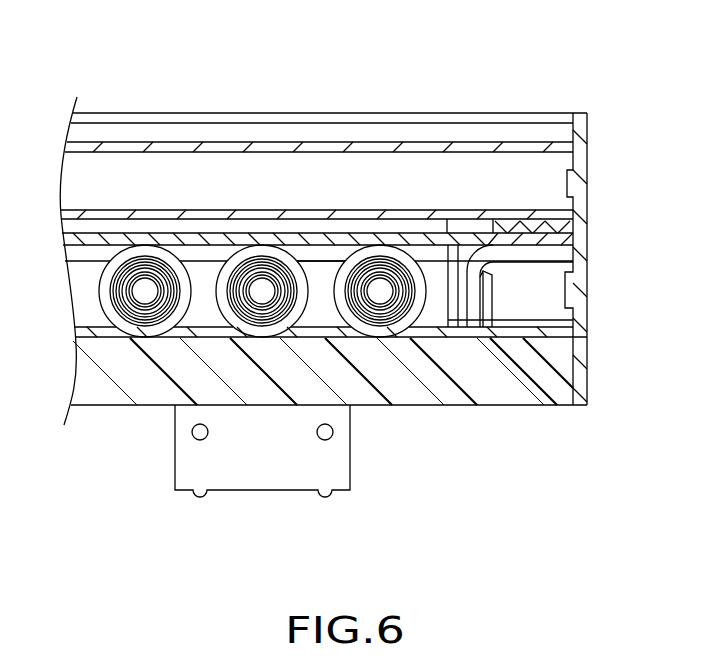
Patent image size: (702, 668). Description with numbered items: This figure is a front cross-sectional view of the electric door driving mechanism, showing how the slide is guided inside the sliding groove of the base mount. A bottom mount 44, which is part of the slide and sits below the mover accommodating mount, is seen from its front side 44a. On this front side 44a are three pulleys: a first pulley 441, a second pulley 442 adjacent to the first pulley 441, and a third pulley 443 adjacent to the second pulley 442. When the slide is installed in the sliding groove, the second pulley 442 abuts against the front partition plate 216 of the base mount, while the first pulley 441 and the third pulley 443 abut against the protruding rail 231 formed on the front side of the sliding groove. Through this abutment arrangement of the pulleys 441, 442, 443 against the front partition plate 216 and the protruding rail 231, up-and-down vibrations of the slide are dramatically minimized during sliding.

The front partition plate 216 is at (262, 243).
The front side of bottom mount 44a is at (322, 280).
The bottom mount 44 is at (320, 308).
The first pulley 441 is at (138, 328).
The second pulley 442 is at (240, 328).
The third pulley 443 is at (430, 328).
The protruding rail 231 is at (525, 338).